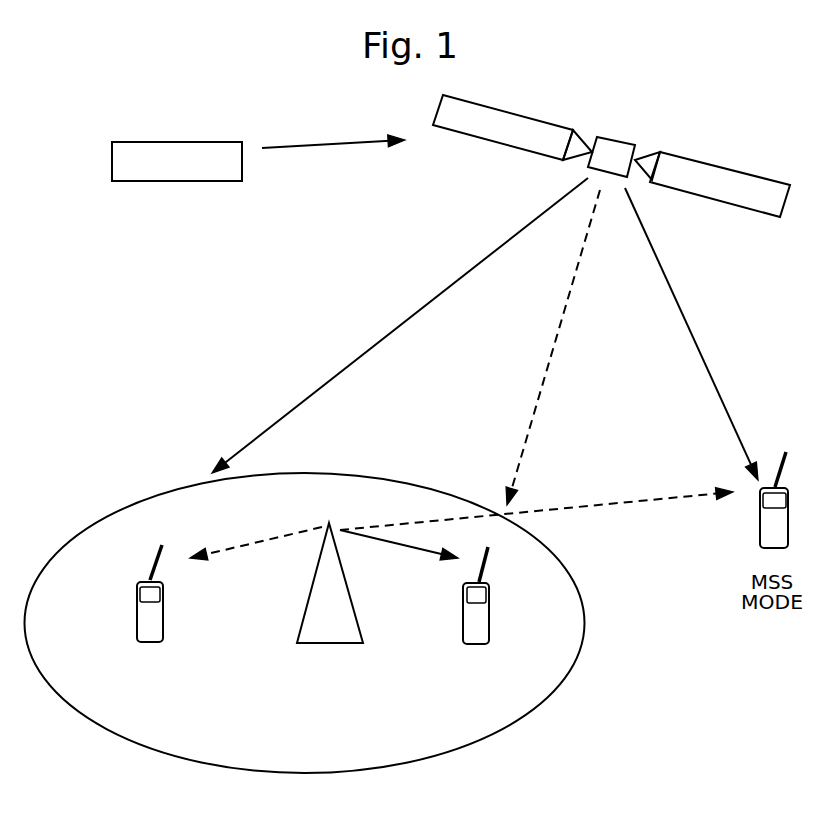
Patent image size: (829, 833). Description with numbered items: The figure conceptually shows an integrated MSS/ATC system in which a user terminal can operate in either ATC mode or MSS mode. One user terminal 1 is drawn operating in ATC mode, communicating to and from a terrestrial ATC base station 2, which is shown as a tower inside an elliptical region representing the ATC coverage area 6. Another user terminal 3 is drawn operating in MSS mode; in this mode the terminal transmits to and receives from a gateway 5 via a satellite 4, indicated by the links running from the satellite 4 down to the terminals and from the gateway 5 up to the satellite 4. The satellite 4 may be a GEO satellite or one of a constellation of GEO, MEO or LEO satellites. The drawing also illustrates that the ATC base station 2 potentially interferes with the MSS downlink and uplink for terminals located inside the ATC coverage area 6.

The user terminal 1 is at (465, 602).
The ATC base station 2 is at (310, 602).
The user terminal 3 is at (138, 598).
The satellite 4 is at (619, 142).
The gateway 5 is at (112, 153).
The ATC coverage area 6 is at (432, 491).